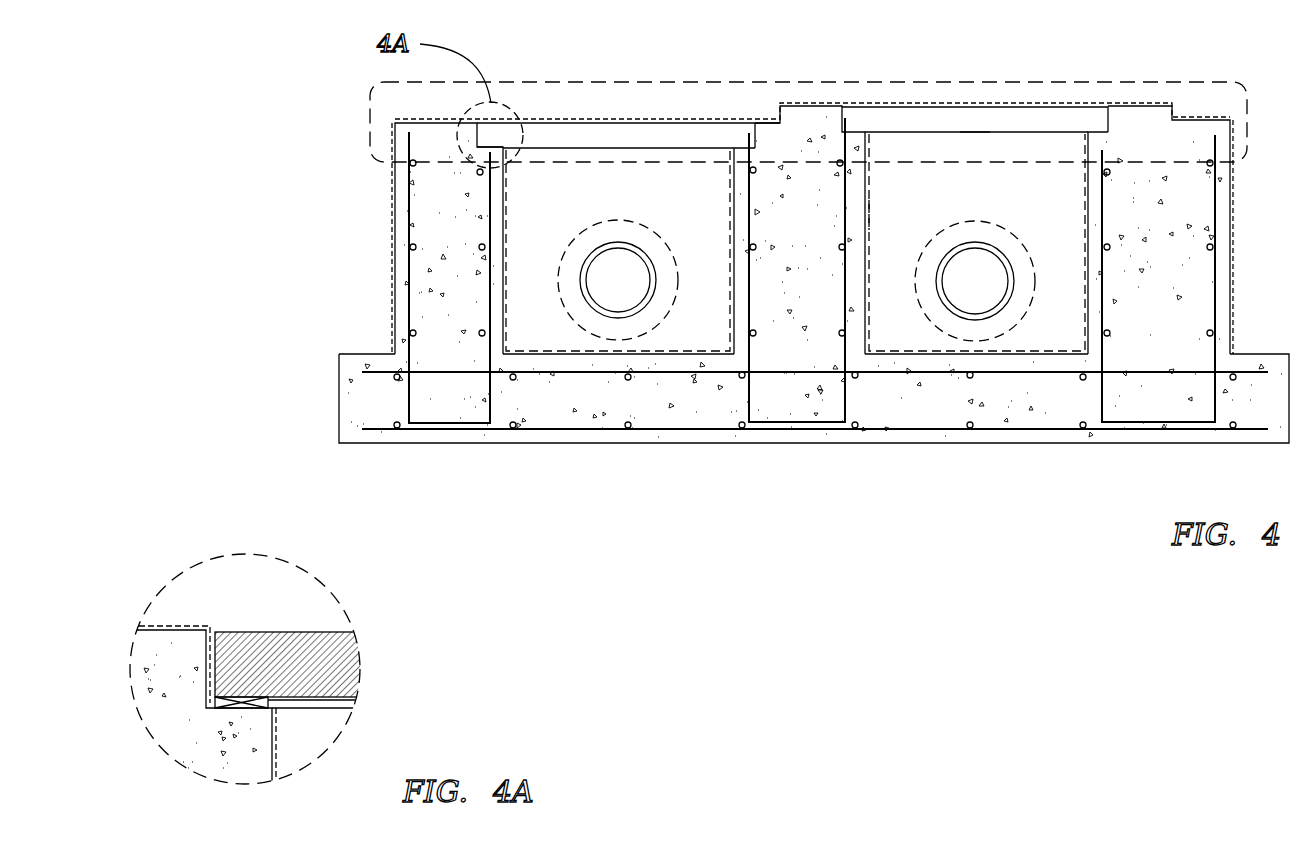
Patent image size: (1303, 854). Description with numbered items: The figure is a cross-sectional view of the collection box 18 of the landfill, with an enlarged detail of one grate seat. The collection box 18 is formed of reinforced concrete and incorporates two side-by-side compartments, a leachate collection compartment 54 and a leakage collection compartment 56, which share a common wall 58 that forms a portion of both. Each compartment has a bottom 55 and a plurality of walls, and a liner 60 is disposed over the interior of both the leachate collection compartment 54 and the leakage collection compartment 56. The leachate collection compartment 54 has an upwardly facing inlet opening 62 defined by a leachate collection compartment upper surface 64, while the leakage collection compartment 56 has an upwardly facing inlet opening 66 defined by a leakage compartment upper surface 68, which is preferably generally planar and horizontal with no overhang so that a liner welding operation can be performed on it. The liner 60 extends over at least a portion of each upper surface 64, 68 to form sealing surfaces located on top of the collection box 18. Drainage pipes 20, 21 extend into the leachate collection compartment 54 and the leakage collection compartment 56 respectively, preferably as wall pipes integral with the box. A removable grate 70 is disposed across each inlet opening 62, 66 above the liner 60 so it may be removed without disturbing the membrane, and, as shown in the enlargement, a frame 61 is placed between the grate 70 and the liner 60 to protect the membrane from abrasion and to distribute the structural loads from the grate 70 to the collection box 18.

In FIG. 4, the collection box 18 is at (803, 496).
In FIG. 4, the drainage pipe 20 is at (1008, 262).
In FIG. 4, the drainage pipe 21 is at (655, 253).
In FIG. 4, the leachate collection compartment 54 is at (1003, 208).
In FIG. 4, the bottom 55 is at (698, 362).
In FIG. 4, the leakage collection compartment 56 is at (630, 208).
In FIG. 4, the common wall 58 is at (820, 348).
In FIG. 4, the liner 60 is at (866, 212).
In FIG. 4A, the frame 61 is at (255, 699).
In FIG. 4, the inlet opening 62 is at (975, 145).
In FIG. 4, the leachate collection compartment upper surface 64 is at (808, 105).
In FIG. 4, the inlet opening 66 is at (607, 163).
In FIG. 4, the leakage compartment upper surface 68 is at (428, 121).
In FIG. 4, the removable grate 70 is at (617, 122).